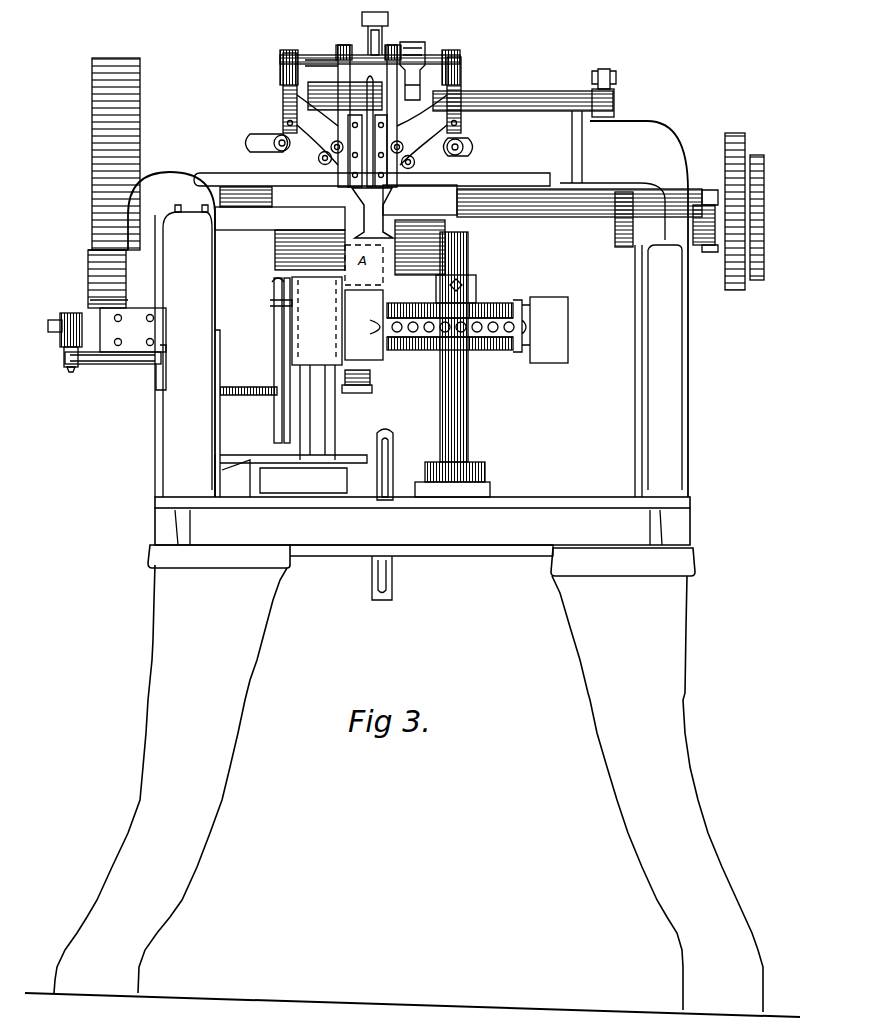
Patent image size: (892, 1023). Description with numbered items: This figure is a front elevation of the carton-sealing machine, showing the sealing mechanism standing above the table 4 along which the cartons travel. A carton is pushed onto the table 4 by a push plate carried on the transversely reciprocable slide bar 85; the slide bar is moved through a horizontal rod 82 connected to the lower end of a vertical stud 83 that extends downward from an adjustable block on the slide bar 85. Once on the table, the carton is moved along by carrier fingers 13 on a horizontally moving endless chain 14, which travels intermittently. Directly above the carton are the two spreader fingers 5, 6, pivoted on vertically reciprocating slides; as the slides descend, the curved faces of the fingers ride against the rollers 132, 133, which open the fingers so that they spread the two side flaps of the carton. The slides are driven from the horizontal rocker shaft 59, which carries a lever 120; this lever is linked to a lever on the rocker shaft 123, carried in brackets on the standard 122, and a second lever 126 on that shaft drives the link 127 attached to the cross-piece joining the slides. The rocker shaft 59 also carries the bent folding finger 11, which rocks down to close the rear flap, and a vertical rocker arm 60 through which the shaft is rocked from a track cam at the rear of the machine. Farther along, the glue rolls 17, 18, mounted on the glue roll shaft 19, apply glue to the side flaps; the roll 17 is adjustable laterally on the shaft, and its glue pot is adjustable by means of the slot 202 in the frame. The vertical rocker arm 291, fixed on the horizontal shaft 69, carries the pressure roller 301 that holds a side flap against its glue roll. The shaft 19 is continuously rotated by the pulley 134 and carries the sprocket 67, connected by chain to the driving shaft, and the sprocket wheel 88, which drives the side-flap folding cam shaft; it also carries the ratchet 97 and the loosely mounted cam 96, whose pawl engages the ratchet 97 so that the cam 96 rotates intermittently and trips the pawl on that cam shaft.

The table 4 is at (312, 418).
The spreader finger 5 is at (300, 112).
The spreader finger 6 is at (450, 120).
The bent folding finger 11 is at (392, 208).
The carrier fingers 13 is at (548, 335).
The endless chain 14 is at (480, 312).
The glue roll 17 is at (290, 232).
The glue roll 18 is at (425, 235).
The glue roll shaft 19 is at (545, 217).
The rocker shaft 59 is at (497, 95).
The vertical rocker arm 60 is at (606, 71).
The sprocket 67 is at (754, 278).
The horizontal shaft 69 is at (392, 470).
The horizontal rod 82 is at (120, 364).
The vertical shaft or stud 83 is at (72, 370).
The slide bar 85 is at (55, 325).
The sprocket wheel 88 is at (625, 250).
The cam 96 is at (737, 292).
The ratchet 97 is at (717, 252).
The lever 120 is at (425, 75).
The standard 122 is at (630, 147).
The rocker shaft 123 is at (300, 46).
The lever 126 is at (382, 37).
The link 127 is at (365, 35).
The roller 132 is at (318, 159).
The roller 133 is at (415, 163).
The pulley 134 is at (112, 58).
The slot 202 is at (262, 142).
The vertical rocker arm 291 is at (288, 306).
The pressure roller 301 is at (300, 285).